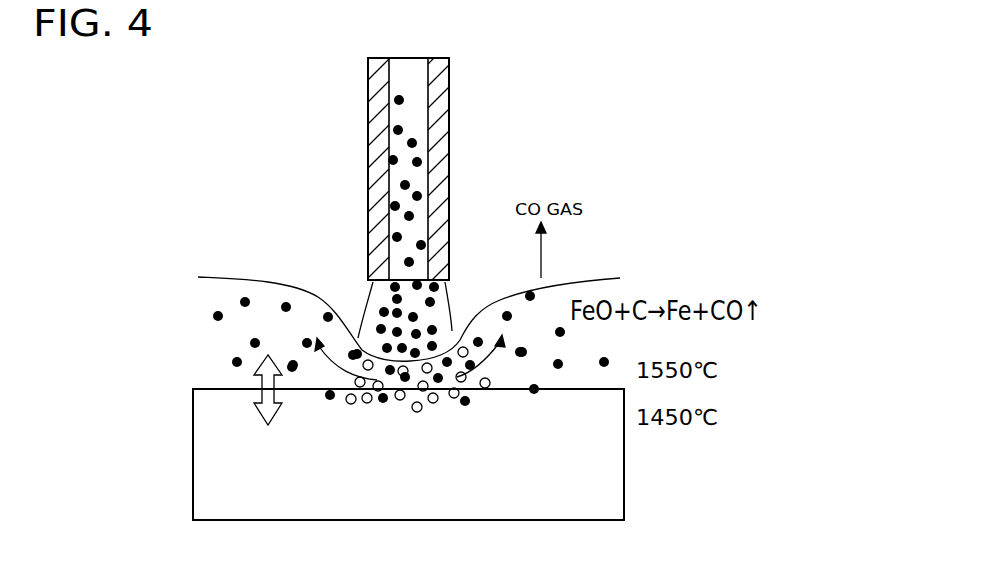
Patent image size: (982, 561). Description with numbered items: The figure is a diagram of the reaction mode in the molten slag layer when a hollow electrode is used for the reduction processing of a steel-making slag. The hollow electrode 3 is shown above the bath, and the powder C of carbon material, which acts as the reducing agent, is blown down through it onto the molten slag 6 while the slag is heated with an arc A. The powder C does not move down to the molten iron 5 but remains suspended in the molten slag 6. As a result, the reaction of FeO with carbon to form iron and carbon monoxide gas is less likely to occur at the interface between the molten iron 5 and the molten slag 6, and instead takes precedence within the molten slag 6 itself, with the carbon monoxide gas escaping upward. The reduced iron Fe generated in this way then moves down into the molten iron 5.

The hollow electrode 3 is at (456, 103).
The molten iron 5 is at (600, 493).
The molten slag 6 is at (210, 294).
The arc A is at (360, 300).
The powder of carbon material C is at (285, 303).
The reduced iron Fe is at (440, 403).